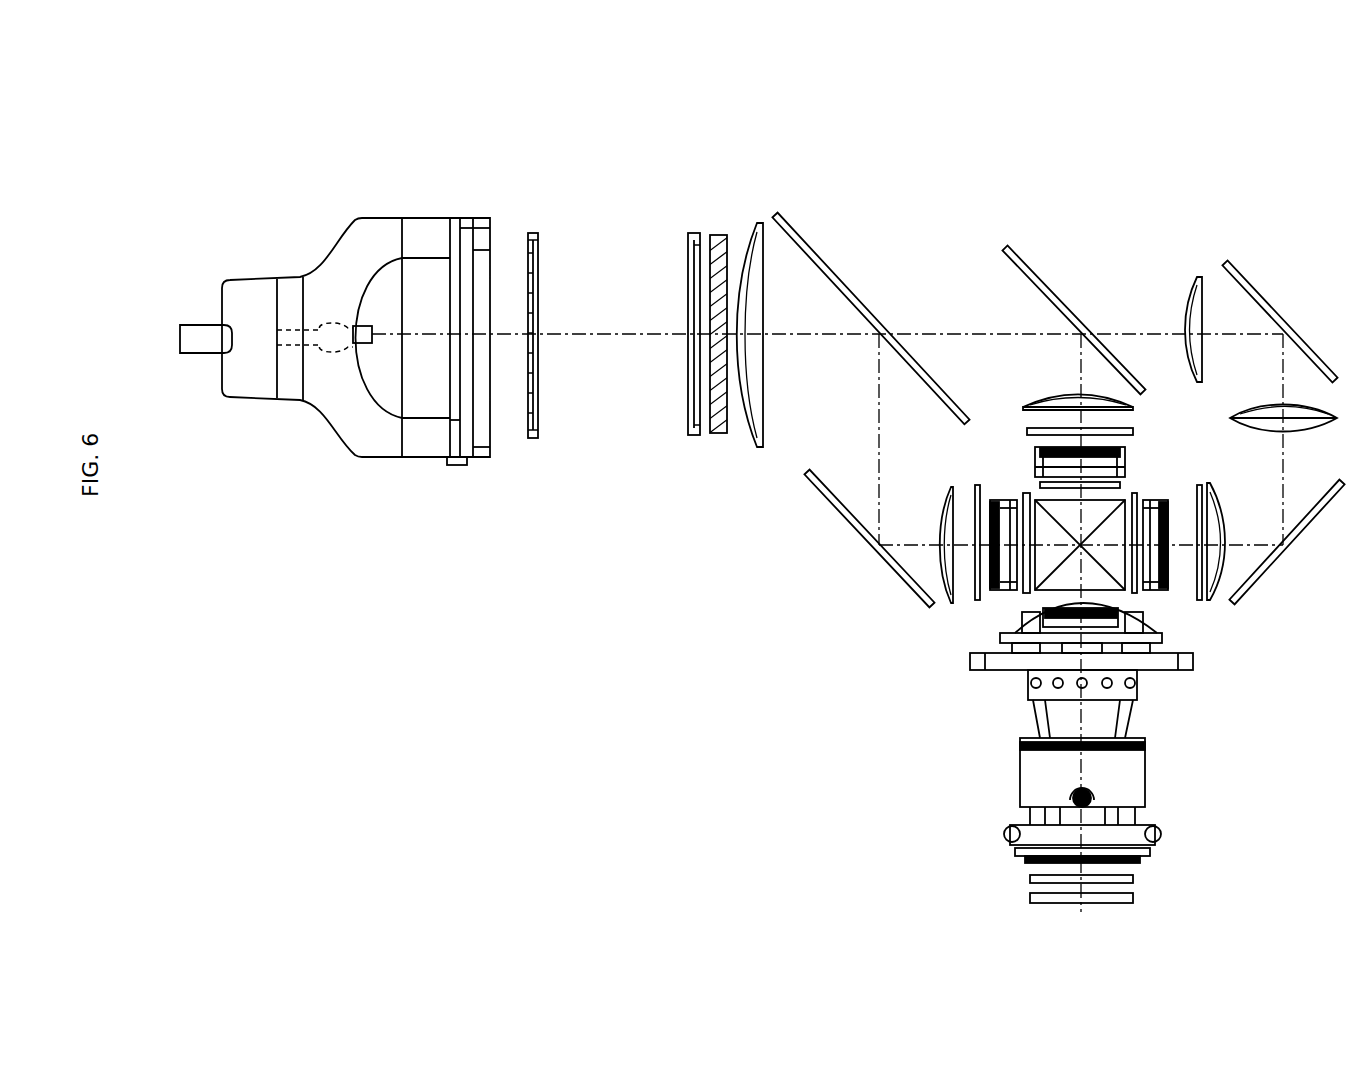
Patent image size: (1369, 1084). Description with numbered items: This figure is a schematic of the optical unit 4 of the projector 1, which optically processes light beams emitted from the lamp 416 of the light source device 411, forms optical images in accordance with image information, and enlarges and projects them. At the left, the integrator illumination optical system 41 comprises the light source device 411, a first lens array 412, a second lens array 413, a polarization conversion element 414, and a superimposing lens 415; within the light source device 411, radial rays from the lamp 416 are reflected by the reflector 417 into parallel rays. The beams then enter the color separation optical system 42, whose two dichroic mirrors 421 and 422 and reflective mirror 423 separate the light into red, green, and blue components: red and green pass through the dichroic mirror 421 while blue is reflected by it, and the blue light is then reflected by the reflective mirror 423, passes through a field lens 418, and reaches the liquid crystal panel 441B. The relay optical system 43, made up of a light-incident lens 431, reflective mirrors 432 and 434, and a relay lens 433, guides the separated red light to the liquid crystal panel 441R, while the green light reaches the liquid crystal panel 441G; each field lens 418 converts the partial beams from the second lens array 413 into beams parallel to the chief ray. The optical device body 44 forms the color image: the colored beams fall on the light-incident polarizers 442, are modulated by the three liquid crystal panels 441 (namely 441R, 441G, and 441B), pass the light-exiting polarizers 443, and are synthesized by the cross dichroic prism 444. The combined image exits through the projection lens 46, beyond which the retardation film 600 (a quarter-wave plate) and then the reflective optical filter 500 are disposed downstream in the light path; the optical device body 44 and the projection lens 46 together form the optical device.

The projector 1 is at (1236, 156).
The optical unit 4 is at (1168, 200).
The integrator illumination optical system 41 is at (400, 186).
The light source device 411 is at (420, 540).
The first lens array 412 is at (530, 440).
The second lens array 413 is at (690, 440).
The polarization conversion element 414 is at (718, 440).
The superimposing lens 415 is at (760, 445).
The lamp 416 is at (318, 353).
The reflector 417 is at (385, 440).
The field lens 418 is at (1140, 407).
The color separation optical system 42 is at (807, 186).
The dichroic mirror 421 is at (813, 250).
The dichroic mirror 422 is at (1022, 250).
The reflective mirror 423 is at (840, 515).
The relay optical system 43 is at (1261, 246).
The light-incident lens 431 is at (1187, 292).
The reflective mirror 432 is at (1280, 307).
The relay lens 433 is at (1310, 433).
The reflective mirror 434 is at (1310, 523).
The optical device body 44 is at (950, 607).
The liquid crystal panel 441 is at (1099, 573).
The liquid crystal panel for red light 441R is at (1157, 590).
The liquid crystal panel for green light 441G is at (1125, 468).
The liquid crystal panel for blue light 441B is at (997, 593).
The light-incident polarizer 442 is at (1027, 434).
The light-exiting polarizer 443 is at (1135, 496).
The cross dichroic prism 444 is at (1103, 585).
The projection lens 46 is at (1123, 783).
The reflective optical filter 500 is at (1133, 898).
The retardation film 600 is at (1133, 878).